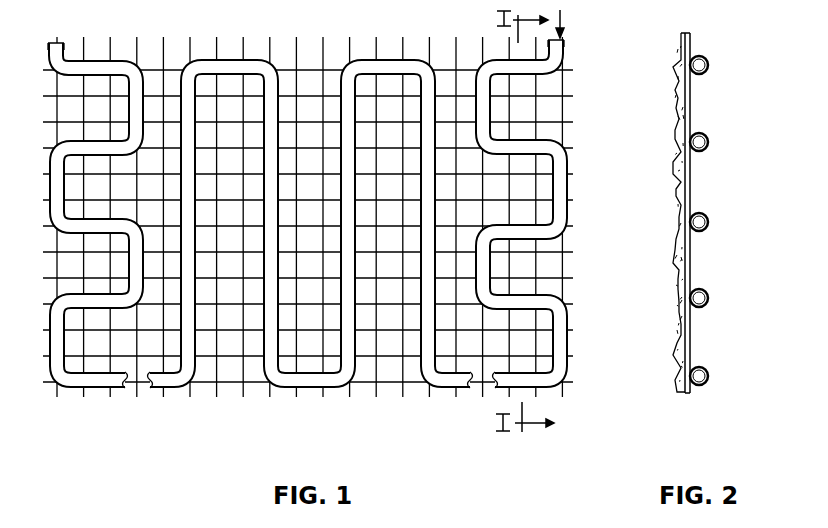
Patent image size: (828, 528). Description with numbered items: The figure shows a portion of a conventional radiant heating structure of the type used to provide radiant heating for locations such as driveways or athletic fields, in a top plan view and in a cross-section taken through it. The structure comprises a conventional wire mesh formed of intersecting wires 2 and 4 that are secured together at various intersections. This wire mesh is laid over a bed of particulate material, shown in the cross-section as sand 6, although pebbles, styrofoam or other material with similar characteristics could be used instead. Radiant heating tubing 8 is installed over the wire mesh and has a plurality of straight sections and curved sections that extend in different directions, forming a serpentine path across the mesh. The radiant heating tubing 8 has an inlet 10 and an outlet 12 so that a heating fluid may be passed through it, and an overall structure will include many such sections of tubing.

In FIG. 1, the intersecting wires 2 is at (305, 232).
In FIG. 2, the intersecting wires 2 is at (692, 213).
In FIG. 1, the intersecting wires 4 is at (45, 300).
In FIG. 2, the intersecting wires 4 is at (682, 180).
In FIG. 2, the sand 6 is at (676, 232).
In FIG. 1, the radiant heating tubing 8 is at (325, 198).
In FIG. 2, the radiant heating tubing 8 is at (704, 134).
In FIG. 1, the inlet 10 is at (562, 48).
In FIG. 1, the outlet 12 is at (70, 58).